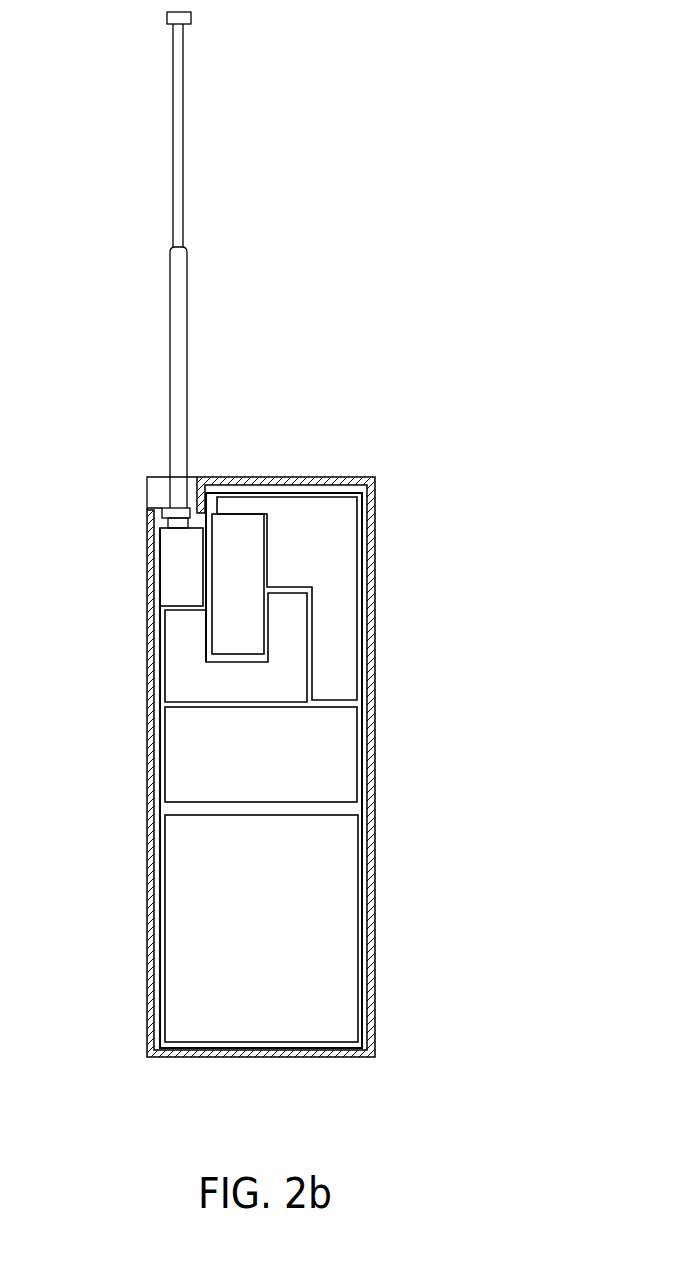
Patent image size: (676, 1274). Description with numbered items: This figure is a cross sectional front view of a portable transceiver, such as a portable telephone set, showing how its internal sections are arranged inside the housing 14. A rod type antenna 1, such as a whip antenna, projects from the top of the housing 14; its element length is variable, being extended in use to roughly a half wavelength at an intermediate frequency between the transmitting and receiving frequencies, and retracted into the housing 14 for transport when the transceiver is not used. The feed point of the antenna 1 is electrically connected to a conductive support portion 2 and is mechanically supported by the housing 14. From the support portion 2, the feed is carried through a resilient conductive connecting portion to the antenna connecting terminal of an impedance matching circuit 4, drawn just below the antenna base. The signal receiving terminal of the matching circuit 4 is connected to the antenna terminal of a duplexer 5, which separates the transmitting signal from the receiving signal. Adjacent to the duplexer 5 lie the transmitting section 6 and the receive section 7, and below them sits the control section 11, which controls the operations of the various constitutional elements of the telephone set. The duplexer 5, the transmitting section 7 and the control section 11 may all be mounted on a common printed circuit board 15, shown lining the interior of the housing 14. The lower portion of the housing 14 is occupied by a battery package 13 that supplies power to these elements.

The antenna 1 is at (183, 87).
The conductive support portion 2 is at (165, 507).
The impedance matching circuit 4 is at (167, 548).
The duplexer 5 is at (230, 527).
The transmit section 6 is at (172, 659).
The transmitting section 7 is at (363, 598).
The control section 11 is at (347, 752).
The battery package 13 is at (350, 858).
The housing 14 is at (183, 1058).
The printed circuit board 15 is at (163, 782).